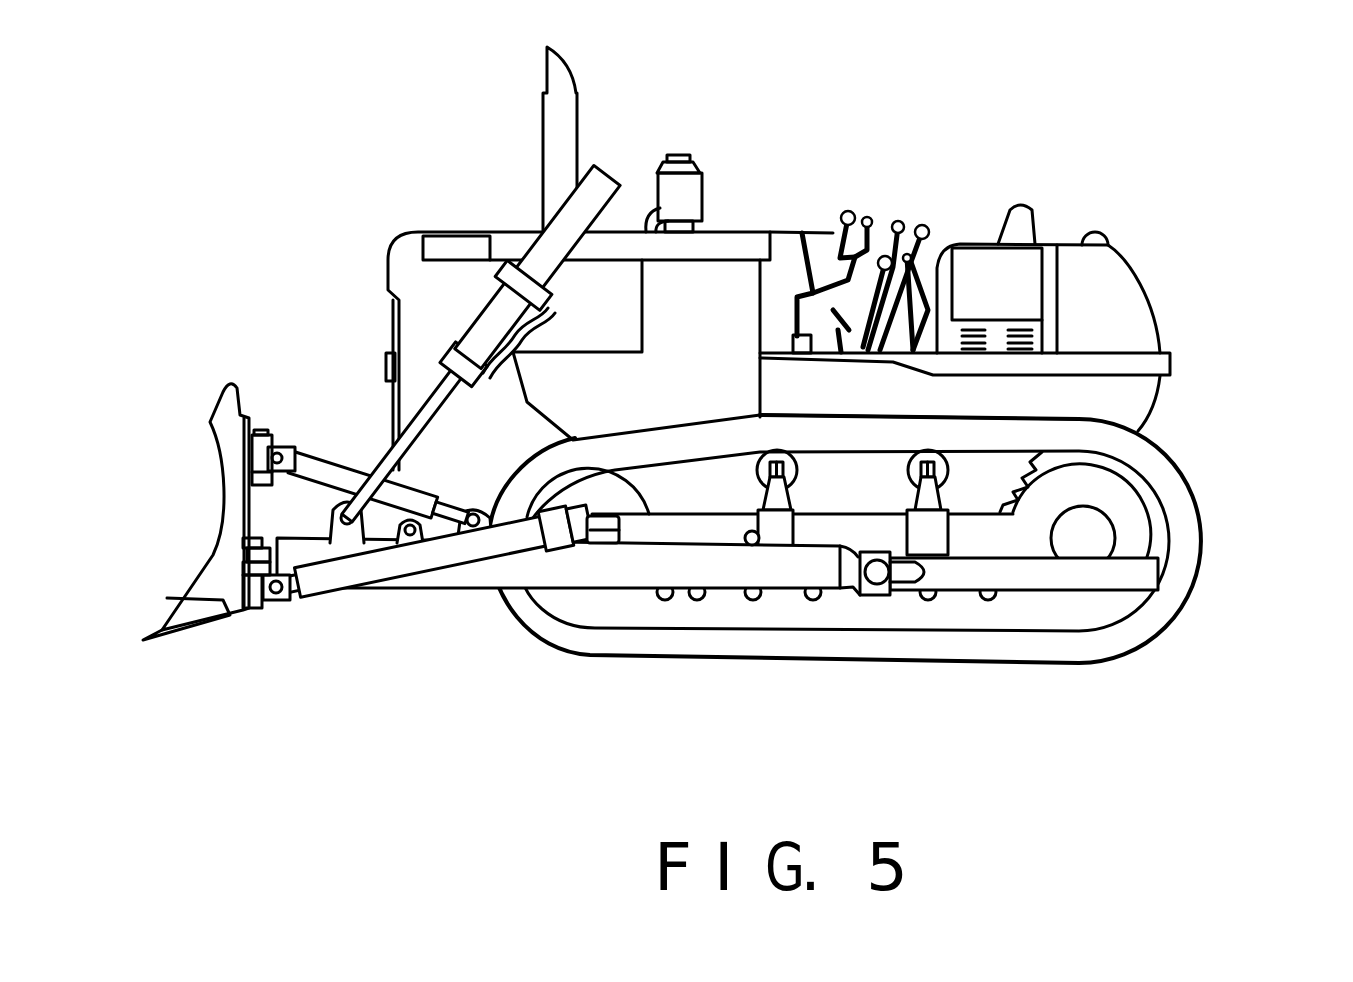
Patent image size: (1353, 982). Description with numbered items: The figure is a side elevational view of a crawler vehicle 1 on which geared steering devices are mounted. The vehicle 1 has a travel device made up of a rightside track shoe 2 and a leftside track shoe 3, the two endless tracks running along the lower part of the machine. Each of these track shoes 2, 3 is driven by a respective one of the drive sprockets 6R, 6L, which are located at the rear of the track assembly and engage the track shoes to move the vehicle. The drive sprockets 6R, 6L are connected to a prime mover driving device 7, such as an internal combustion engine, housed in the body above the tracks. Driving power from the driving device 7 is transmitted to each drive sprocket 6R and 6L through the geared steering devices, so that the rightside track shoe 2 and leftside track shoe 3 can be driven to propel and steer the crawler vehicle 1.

The vehicle 1 is at (735, 397).
The rightside track shoe 2 is at (592, 653).
The leftside track shoe 3 is at (844, 603).
The drive sprocket 6R is at (1020, 450).
The drive sprocket 6L is at (1189, 501).
The prime mover driving device 7 is at (391, 256).